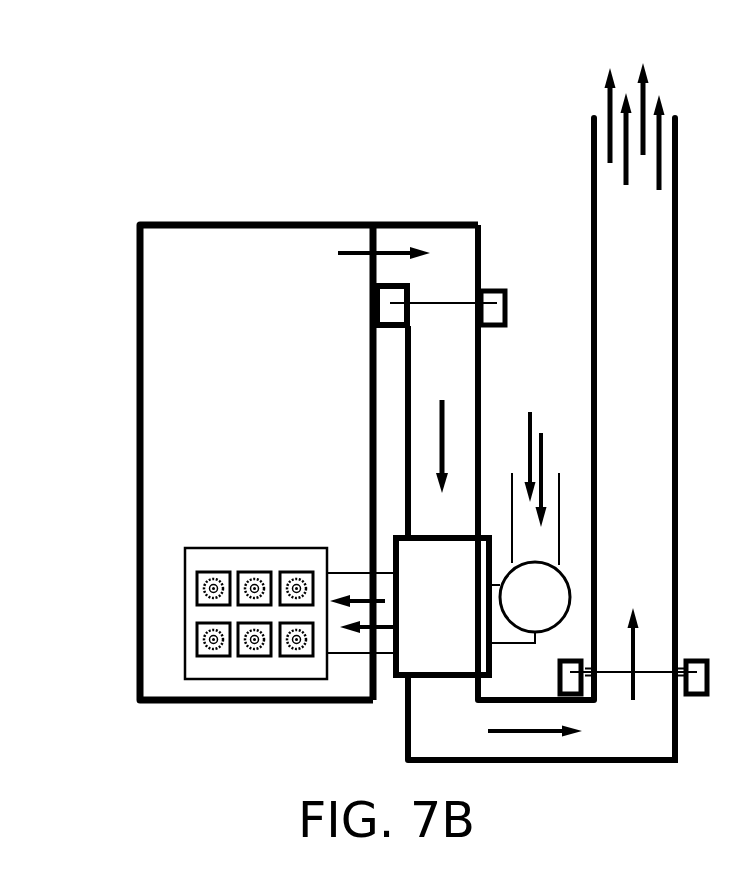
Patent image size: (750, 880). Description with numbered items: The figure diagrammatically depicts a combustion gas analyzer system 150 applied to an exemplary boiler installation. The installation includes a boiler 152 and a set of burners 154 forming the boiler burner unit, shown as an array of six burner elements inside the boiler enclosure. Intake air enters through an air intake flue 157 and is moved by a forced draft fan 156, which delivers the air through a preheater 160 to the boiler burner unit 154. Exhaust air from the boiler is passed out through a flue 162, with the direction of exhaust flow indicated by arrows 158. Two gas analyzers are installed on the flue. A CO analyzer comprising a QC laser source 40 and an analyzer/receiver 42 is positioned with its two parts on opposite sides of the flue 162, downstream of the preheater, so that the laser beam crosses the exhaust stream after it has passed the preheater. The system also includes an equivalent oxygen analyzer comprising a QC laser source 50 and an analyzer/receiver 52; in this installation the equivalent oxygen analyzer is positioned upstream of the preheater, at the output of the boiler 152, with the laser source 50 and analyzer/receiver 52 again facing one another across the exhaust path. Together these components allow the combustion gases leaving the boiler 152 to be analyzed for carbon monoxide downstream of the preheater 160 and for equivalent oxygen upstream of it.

The indoor air treatment system 150 is at (252, 168).
The boiler 152 is at (137, 348).
The burners 154 is at (185, 601).
The forced draft fan 156 is at (537, 632).
The air intake flue 157 is at (562, 497).
The arrows 158 is at (445, 421).
The preheater 160 is at (404, 690).
The flue 162 is at (479, 240).
The QC laser source 50 is at (396, 330).
The analyzer/receiver 52 is at (495, 289).
The QC laser source 40 is at (575, 658).
The analyzer/receiver 42 is at (700, 697).